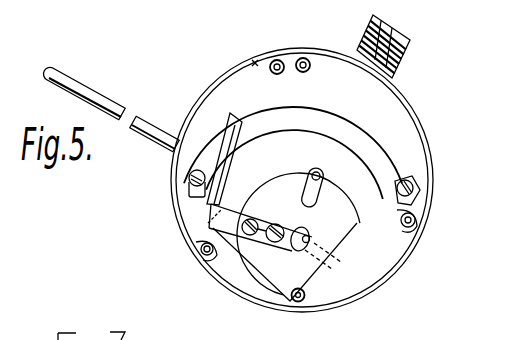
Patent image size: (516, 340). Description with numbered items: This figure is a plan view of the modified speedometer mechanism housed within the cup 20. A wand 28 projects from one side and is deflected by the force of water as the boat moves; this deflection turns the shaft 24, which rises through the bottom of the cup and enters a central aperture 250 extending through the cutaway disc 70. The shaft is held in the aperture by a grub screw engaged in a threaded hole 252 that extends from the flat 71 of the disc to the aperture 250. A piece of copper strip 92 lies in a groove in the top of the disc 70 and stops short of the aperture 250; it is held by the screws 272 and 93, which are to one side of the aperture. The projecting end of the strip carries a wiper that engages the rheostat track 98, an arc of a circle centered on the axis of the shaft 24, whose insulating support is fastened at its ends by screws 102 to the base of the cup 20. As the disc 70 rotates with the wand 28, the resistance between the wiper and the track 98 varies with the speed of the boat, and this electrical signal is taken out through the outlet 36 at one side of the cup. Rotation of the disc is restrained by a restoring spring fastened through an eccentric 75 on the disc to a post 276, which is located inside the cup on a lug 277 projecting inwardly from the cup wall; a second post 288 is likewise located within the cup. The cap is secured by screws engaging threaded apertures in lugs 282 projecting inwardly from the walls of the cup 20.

The cup 20 is at (180, 222).
The shaft 24 is at (310, 239).
The wand 28 is at (135, 112).
The outlet 36 is at (400, 42).
The cutaway disc 70 is at (257, 270).
The flat 71 is at (312, 278).
The eccentric 75 is at (326, 183).
The copper strip 92 is at (201, 249).
The screw 93 is at (242, 212).
The rheostat track 98 is at (380, 148).
The screws 102 is at (190, 180).
The central aperture 250 is at (306, 236).
The threaded hole 252 is at (327, 260).
The screw 272 is at (277, 224).
The post 276 is at (278, 60).
The lug 277 is at (256, 64).
The lugs 282 is at (305, 58).
The post 288 is at (297, 305).